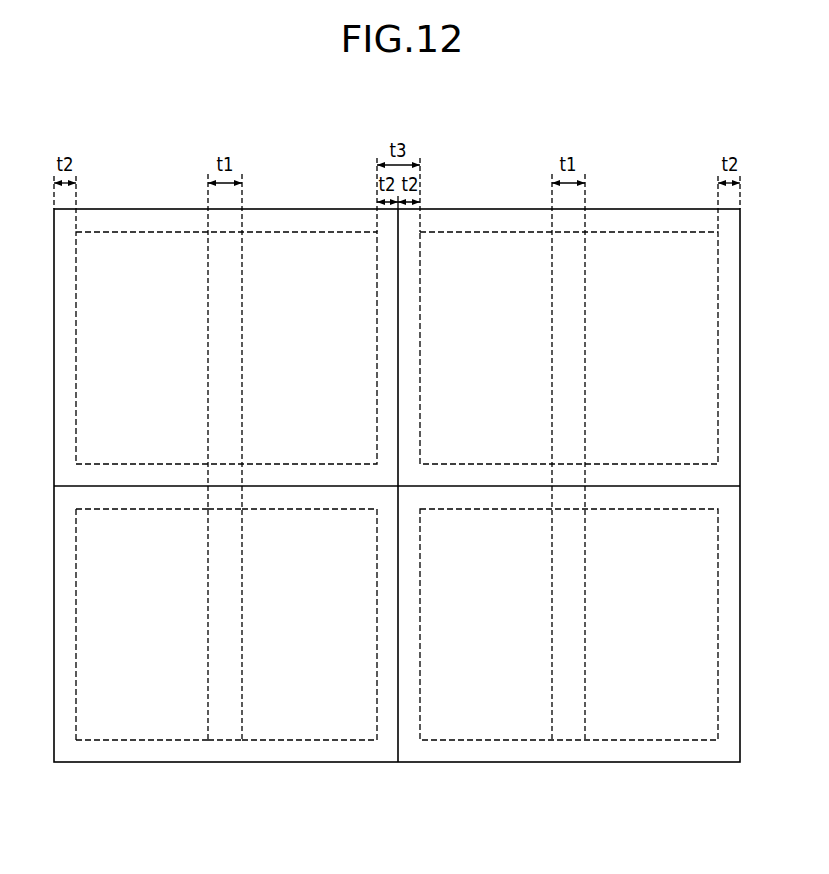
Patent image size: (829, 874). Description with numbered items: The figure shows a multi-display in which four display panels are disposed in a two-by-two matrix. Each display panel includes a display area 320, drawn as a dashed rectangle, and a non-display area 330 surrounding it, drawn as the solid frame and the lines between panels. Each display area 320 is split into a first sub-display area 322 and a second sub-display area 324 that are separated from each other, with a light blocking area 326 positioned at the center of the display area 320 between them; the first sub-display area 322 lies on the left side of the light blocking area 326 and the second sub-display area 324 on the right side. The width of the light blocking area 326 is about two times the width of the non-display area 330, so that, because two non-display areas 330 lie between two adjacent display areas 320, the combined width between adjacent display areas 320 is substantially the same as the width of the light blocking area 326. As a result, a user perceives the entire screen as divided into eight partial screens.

The display area 320 is at (397, 539).
The first sub-display area 322 is at (147, 740).
The second sub-display area 324 is at (309, 658).
The light blocking area 326 is at (222, 740).
The non-display area 330 is at (353, 762).